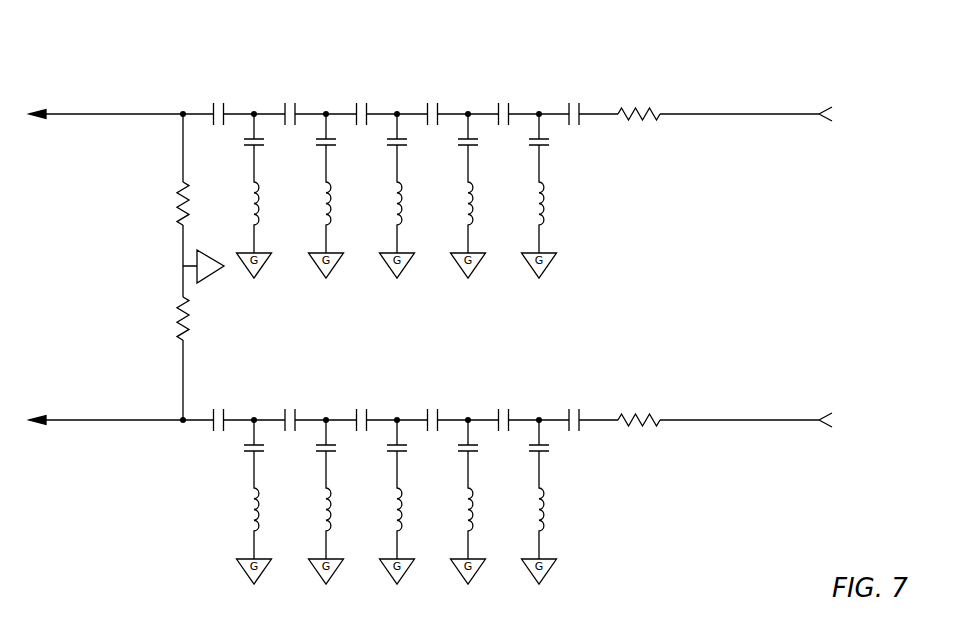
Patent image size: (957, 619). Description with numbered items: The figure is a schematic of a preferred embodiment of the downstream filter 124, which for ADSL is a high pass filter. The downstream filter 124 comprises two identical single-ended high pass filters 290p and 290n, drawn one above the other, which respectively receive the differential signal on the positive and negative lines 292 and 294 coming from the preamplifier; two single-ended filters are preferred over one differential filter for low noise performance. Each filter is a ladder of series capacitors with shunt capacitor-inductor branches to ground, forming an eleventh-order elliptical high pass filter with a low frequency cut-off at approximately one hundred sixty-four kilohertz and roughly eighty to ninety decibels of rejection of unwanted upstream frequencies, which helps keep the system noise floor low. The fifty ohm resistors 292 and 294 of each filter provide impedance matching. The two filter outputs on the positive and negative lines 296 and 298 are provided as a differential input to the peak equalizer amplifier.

The downstream filter 124 is at (298, 68).
The single-ended high pass filter 290p is at (615, 205).
The single-ended high pass filter 290n is at (612, 366).
The positive line 292 is at (660, 114).
The negative line 294 is at (178, 192).
The positive output line 296 is at (89, 113).
The negative output line 298 is at (74, 419).